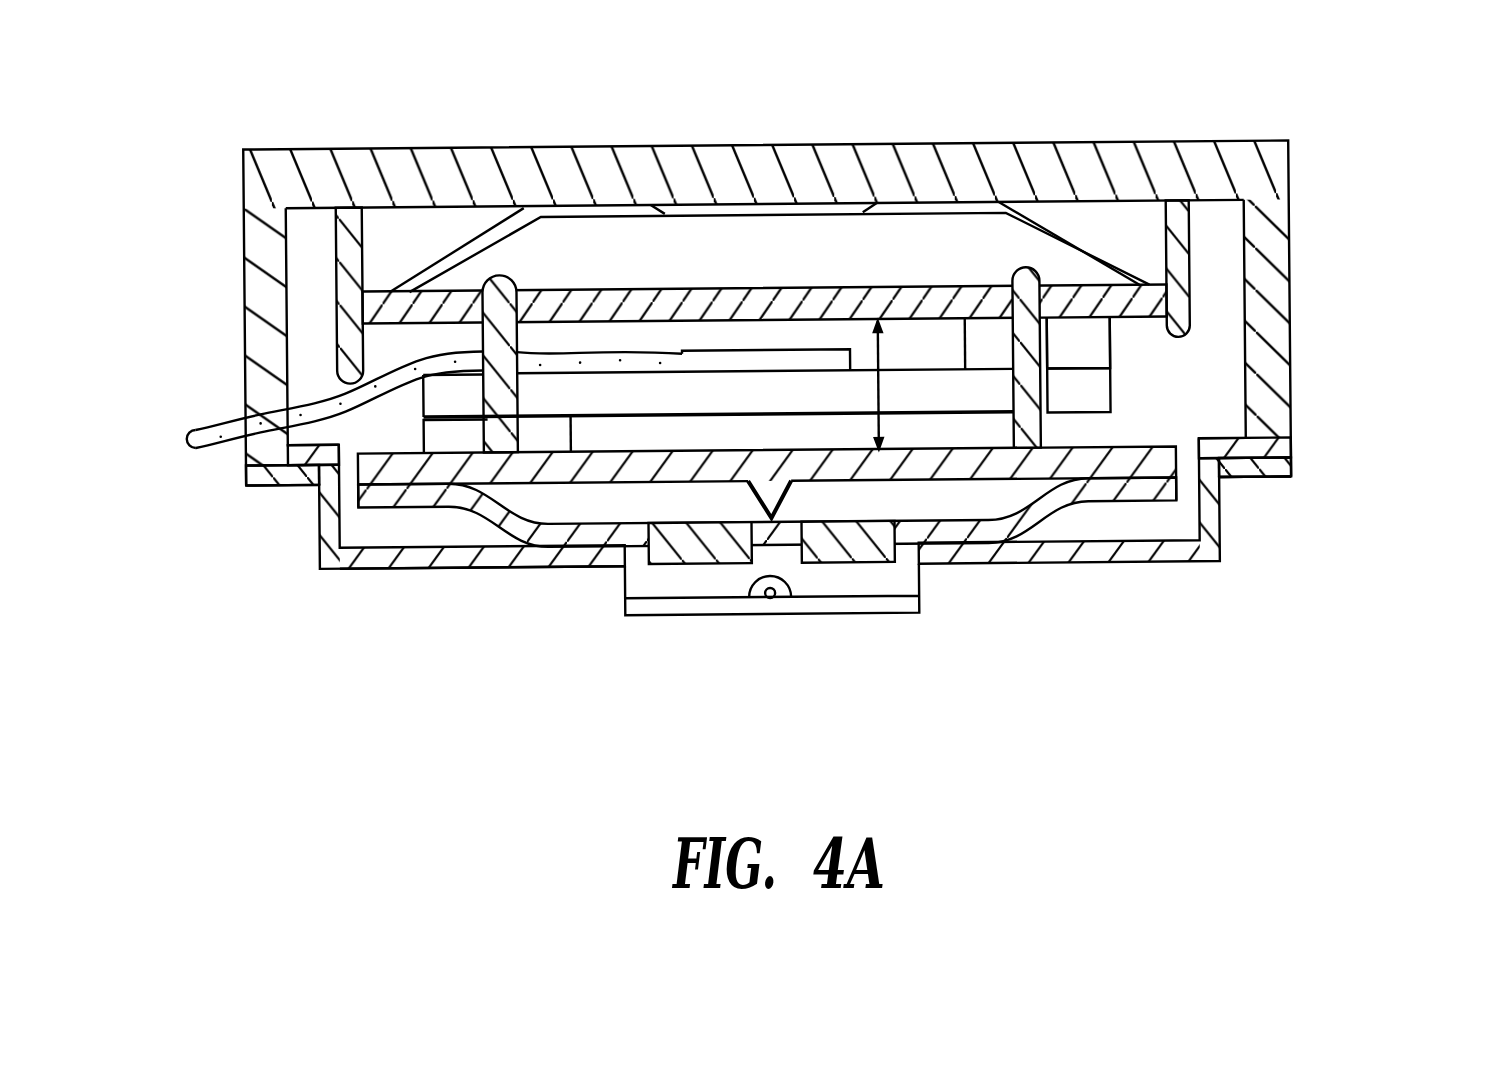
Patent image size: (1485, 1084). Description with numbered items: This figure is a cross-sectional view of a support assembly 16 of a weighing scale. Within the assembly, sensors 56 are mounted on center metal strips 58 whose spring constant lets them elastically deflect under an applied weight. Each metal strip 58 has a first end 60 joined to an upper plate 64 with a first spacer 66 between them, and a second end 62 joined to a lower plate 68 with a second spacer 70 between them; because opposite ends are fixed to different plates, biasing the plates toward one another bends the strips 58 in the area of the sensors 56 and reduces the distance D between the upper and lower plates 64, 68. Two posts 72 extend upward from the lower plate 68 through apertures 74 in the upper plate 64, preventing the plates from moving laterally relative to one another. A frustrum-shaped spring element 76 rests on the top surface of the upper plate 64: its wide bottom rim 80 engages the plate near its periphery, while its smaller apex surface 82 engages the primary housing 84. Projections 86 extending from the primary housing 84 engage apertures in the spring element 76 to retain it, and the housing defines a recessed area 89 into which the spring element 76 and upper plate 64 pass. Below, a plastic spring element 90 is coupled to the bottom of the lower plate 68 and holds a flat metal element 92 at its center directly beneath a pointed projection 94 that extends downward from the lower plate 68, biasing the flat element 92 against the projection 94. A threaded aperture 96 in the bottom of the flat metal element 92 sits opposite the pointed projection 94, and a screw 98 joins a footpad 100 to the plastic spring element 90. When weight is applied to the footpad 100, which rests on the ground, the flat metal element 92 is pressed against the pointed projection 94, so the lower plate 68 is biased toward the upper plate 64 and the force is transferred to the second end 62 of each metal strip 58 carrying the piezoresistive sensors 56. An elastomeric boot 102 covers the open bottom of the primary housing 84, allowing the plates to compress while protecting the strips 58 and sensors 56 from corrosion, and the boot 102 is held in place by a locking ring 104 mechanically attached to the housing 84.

The support assembly 16 is at (1305, 143).
The sensor 56 is at (703, 357).
The center metal strip 58 is at (905, 391).
The first end 60 is at (1113, 390).
The second end 62 is at (422, 392).
The upper plate 64 is at (1152, 293).
The first spacer 66 is at (1073, 348).
The lower plate 68 is at (1198, 524).
The second spacer 70 is at (425, 429).
The post 72 is at (497, 417).
The aperture 74 is at (1050, 279).
The frustrum-shaped spring element 76 is at (437, 262).
The bottom rim 80 is at (392, 288).
The apex surface 82 is at (930, 218).
The primary housing 84 is at (258, 181).
The projection 86 is at (653, 209).
The recessed area 89 is at (373, 214).
The plastic spring element 90 is at (1050, 507).
The flat metal element 92 is at (833, 560).
The pointed projection 94 is at (762, 503).
The threaded aperture 96 is at (748, 587).
The screw 98 is at (783, 590).
The footpad 100 is at (905, 576).
The elastomeric boot 102 is at (470, 559).
The locking ring 104 is at (1260, 487).
The distance D is at (878, 382).